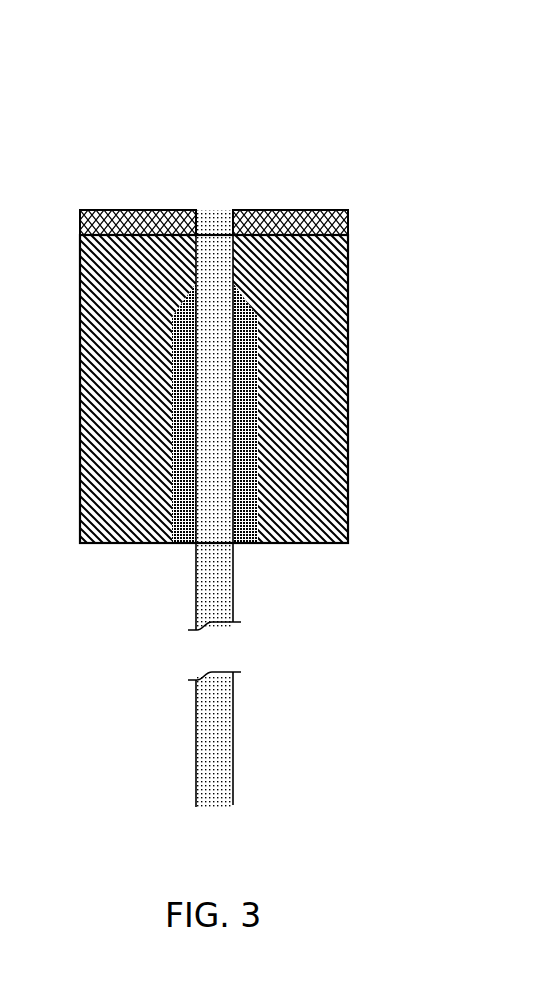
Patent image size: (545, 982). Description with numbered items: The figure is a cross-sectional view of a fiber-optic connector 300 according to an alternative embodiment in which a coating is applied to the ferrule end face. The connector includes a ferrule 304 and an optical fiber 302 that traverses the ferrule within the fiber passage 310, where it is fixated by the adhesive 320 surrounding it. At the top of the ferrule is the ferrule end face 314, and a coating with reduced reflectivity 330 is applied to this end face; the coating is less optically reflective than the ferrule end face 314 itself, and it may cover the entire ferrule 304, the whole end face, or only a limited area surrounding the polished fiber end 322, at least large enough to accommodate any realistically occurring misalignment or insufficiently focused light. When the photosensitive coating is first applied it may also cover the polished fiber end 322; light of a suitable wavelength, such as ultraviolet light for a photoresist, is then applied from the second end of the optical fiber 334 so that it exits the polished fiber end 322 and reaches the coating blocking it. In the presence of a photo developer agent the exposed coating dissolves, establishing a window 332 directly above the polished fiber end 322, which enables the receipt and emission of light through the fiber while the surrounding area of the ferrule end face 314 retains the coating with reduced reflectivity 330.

The fiber-optic connector 300 is at (265, 446).
The optical fiber 302 is at (208, 615).
The ferrule 304 is at (343, 297).
The fiber passage 310 is at (249, 557).
The ferrule end face 314 is at (105, 258).
The adhesive 320 is at (240, 487).
The polished fiber end 322 is at (205, 229).
The coating with reduced reflectivity 330 is at (343, 215).
The window 332 is at (220, 194).
The second end of the optical fiber 334 is at (216, 808).